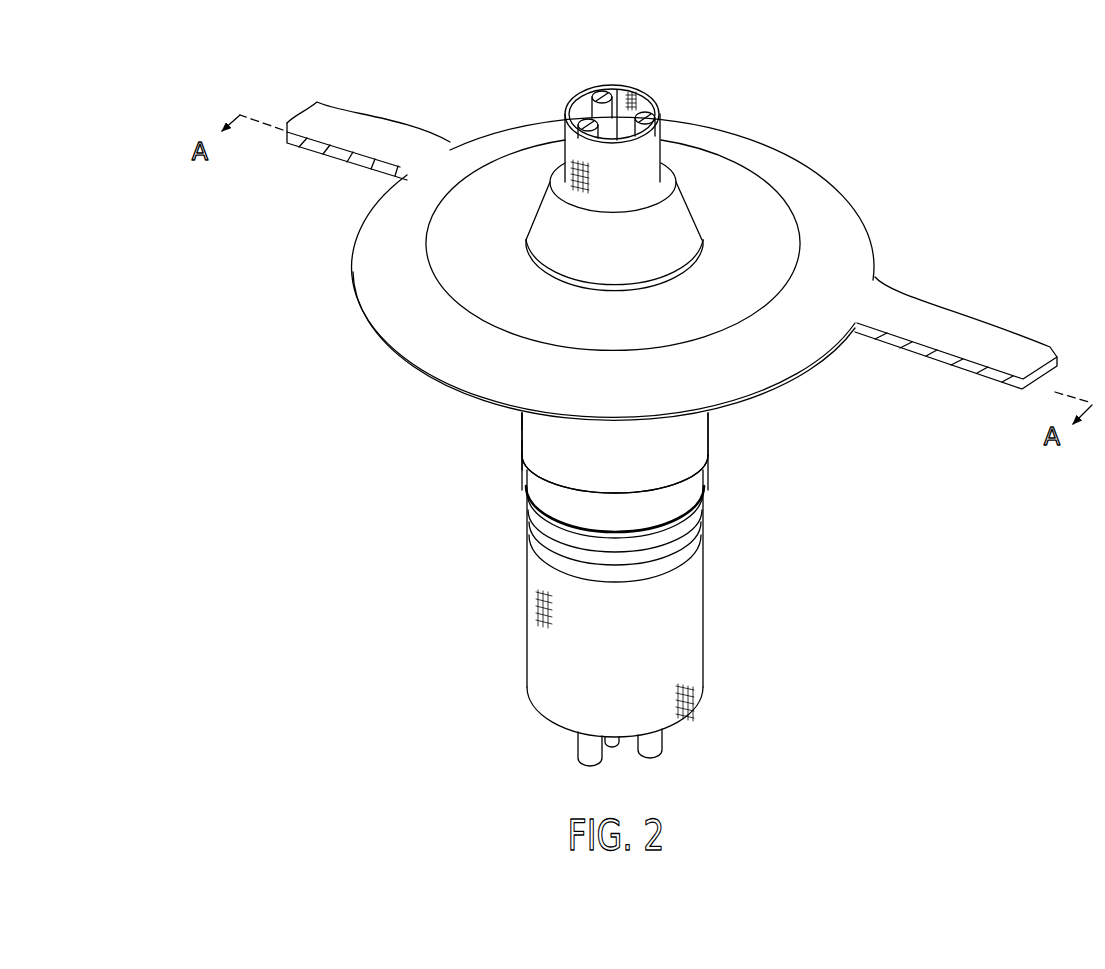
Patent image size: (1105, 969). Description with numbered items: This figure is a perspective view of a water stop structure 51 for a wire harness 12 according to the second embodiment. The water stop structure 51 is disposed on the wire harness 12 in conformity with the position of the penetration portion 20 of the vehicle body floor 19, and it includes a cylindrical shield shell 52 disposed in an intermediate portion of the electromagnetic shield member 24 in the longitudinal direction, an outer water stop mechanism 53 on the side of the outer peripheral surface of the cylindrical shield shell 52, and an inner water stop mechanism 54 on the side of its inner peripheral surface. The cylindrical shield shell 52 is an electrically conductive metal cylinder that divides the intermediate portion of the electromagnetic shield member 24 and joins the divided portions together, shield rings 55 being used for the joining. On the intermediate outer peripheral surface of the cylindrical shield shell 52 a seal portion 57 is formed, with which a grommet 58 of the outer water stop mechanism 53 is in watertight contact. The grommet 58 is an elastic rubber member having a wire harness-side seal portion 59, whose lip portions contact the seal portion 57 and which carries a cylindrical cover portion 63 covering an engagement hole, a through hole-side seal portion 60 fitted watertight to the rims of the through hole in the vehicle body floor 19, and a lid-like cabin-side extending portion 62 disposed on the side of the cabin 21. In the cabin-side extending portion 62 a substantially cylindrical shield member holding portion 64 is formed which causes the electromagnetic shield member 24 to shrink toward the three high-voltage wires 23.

The wire harness 12 is at (513, 683).
The vehicle body floor 19 is at (337, 152).
The penetration portion 20 is at (152, 398).
The cabin 21 is at (460, 114).
The high-voltage wires 23 is at (585, 750).
The electromagnetic shield member 24 is at (650, 145).
The water stop structure 51 is at (478, 548).
The cylindrical shield shell 52 is at (673, 500).
The outer water stop mechanism 53 is at (829, 440).
The inner water stop mechanism 54 is at (535, 423).
The shield rings 55 is at (688, 545).
The seal portion 57 is at (690, 453).
The grommet 58 is at (700, 398).
The wire harness-side seal portion 59 is at (695, 427).
The through hole-side seal portion 60 is at (787, 363).
The cabin-side extending portion 62 is at (773, 265).
The cylindrical cover portion 63 is at (538, 447).
The shield member holding portion 64 is at (672, 215).